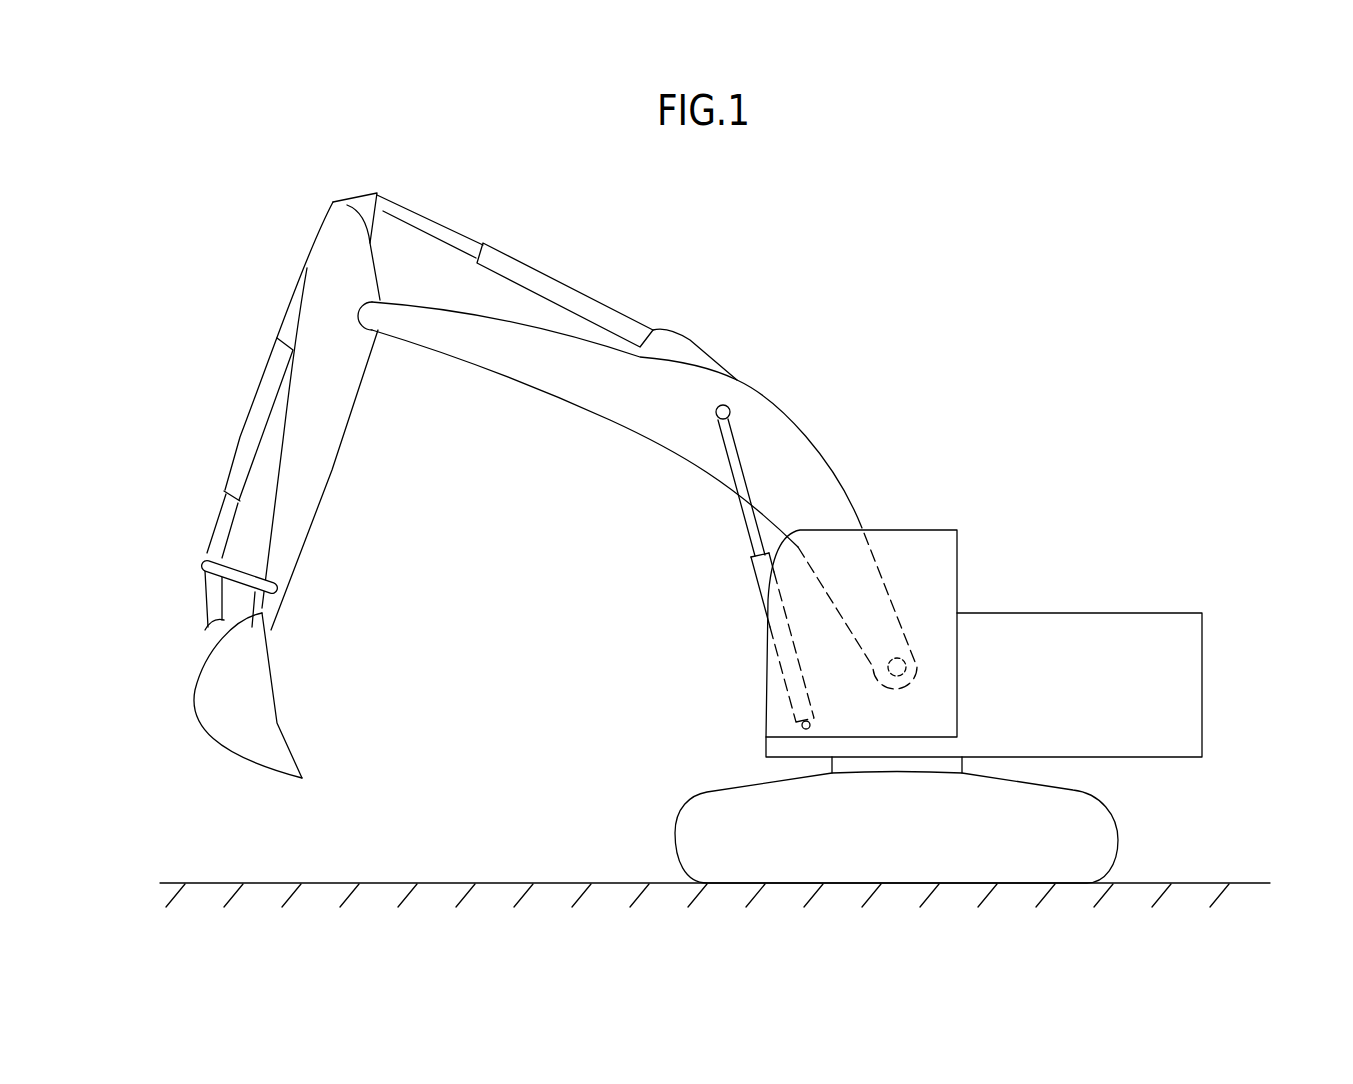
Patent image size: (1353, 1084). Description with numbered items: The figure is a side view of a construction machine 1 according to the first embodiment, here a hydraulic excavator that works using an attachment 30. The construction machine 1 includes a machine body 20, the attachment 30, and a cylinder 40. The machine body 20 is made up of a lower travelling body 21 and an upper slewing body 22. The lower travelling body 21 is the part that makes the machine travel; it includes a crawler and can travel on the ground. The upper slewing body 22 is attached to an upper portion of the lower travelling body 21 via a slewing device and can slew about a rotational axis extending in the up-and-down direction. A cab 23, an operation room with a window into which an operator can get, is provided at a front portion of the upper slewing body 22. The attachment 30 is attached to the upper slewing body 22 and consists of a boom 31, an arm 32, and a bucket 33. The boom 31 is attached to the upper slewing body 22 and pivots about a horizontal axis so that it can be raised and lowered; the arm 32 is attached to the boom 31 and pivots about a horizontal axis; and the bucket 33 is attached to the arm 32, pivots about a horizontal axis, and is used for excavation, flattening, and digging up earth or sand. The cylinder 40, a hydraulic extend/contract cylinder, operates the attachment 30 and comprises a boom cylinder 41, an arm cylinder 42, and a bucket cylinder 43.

The construction machine 1 is at (1147, 297).
The machine body 20 is at (1092, 487).
The lower travelling body 21 is at (1116, 843).
The upper slewing body 22 is at (1203, 688).
The cab 23 is at (765, 710).
The attachment 30 is at (818, 380).
The boom 31 is at (527, 388).
The arm 32 is at (328, 450).
The bucket 33 is at (233, 738).
The cylinder 40 is at (454, 462).
The boom cylinder 41 is at (758, 560).
The arm cylinder 42 is at (553, 279).
The bucket cylinder 43 is at (247, 429).